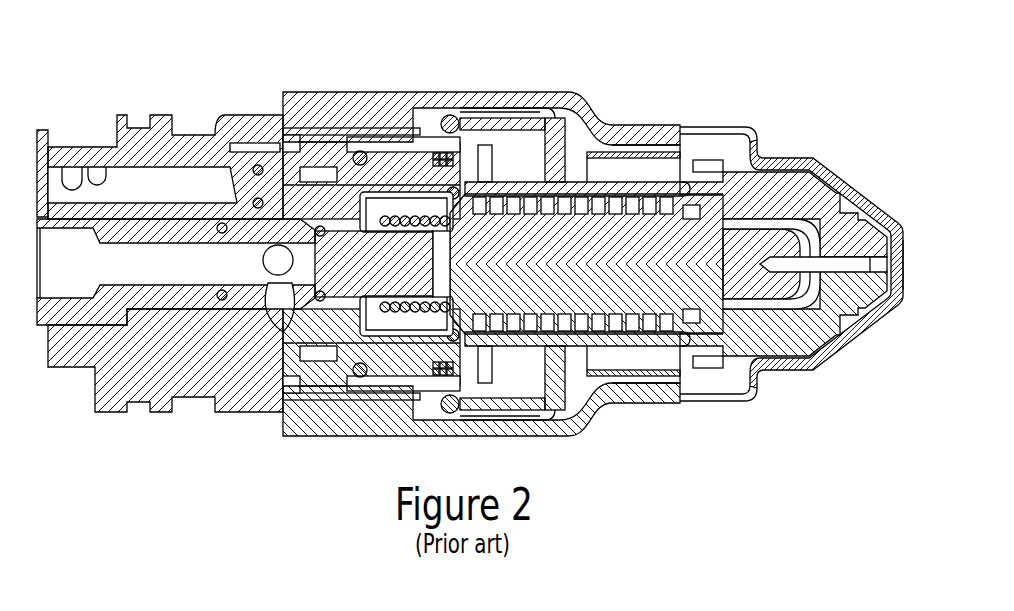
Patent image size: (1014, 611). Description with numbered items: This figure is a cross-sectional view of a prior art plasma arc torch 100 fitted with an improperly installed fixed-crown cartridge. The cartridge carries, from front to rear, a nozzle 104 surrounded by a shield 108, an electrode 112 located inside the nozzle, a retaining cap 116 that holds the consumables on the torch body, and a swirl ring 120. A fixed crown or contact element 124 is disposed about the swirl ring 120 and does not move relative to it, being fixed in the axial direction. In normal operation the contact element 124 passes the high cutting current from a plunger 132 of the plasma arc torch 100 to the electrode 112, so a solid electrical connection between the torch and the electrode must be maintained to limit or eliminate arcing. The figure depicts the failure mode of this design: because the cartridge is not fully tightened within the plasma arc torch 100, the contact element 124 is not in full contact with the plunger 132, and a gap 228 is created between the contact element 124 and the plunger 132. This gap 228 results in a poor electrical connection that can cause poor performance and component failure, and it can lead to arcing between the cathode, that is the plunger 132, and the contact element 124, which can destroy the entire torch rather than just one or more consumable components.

The plasma arc torch 100 is at (491, 252).
The nozzle 104 is at (903, 266).
The shield 108 is at (869, 333).
The electrode 112 is at (754, 217).
The retaining cap 116 is at (616, 126).
The swirl ring 120 is at (617, 340).
The contact element 124 is at (380, 232).
The plunger 132 is at (350, 266).
The gap 228 is at (443, 294).